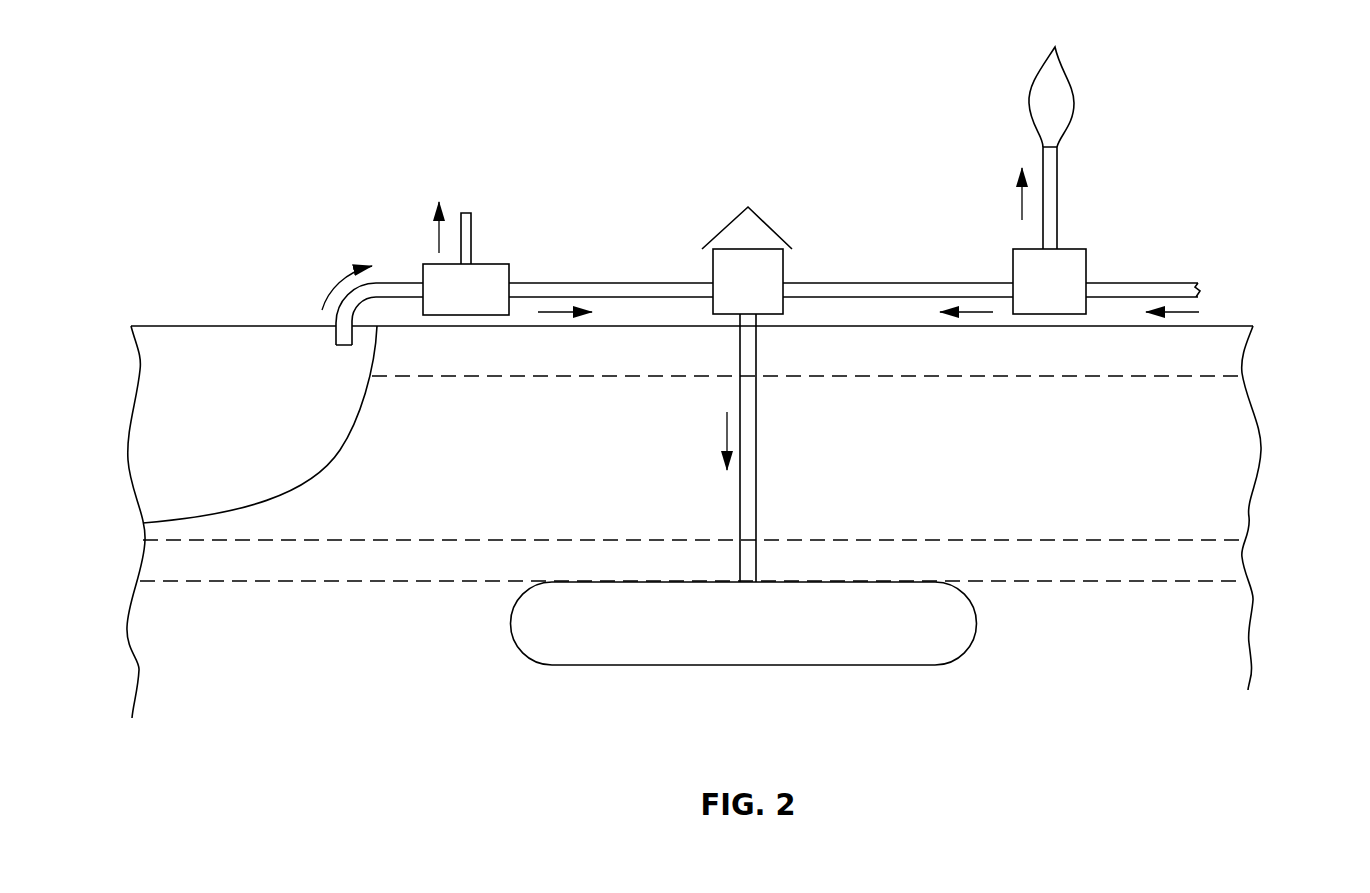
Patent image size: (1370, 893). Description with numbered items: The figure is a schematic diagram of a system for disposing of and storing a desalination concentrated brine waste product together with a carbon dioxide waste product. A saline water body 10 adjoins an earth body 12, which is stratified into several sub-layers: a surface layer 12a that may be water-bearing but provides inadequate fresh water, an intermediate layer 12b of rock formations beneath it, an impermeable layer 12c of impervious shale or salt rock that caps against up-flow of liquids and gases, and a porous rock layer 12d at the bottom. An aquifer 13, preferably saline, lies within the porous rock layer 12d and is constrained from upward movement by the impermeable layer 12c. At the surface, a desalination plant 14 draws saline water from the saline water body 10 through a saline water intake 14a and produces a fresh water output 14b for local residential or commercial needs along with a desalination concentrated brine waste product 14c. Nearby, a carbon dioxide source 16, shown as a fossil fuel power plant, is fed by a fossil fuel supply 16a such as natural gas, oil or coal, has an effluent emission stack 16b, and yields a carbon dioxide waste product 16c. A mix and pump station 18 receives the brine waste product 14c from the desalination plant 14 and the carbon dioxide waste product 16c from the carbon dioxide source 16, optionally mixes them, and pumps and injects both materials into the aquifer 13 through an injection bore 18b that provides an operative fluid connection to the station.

The saline water body 10 is at (215, 428).
The earth body 12 is at (1270, 326).
The surface layer 12a is at (1183, 368).
The intermediate layer 12b is at (1183, 469).
The impermeable layer 12c is at (1183, 574).
The porous rock layer 12d is at (1183, 649).
The aquifer 13 is at (737, 636).
The desalination plant 14 is at (453, 304).
The saline water intake 14a is at (392, 283).
The fresh water output 14b is at (471, 215).
The desalination concentrated brine waste product 14c is at (603, 283).
The carbon dioxide source 16 is at (1037, 294).
The fossil fuel supply 16a is at (1160, 283).
The effluent emission stack 16b is at (1057, 177).
The carbon dioxide waste product 16c is at (895, 284).
The mix and pump station 18 is at (735, 288).
The injection bore 18b is at (752, 463).